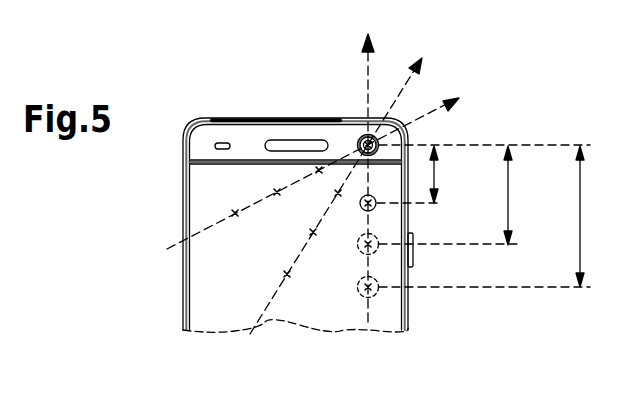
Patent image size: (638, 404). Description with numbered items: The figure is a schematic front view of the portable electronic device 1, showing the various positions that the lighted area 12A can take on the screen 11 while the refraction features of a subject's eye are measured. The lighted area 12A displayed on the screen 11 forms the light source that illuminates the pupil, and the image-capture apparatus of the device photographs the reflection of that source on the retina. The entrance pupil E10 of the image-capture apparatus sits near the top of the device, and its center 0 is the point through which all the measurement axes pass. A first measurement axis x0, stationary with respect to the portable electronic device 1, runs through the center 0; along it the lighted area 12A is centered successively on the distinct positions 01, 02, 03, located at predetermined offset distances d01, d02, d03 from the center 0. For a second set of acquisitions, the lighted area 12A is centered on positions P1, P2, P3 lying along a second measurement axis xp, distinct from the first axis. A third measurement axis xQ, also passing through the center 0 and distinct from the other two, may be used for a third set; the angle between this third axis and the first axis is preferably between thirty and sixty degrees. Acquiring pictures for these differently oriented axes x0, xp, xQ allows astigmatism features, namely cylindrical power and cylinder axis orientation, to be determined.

The portable electronic device 1 is at (210, 117).
The screen 11 is at (248, 286).
The lighted area 12A is at (356, 141).
The entrance pupil E10 is at (361, 143).
The center of the entrance pupil 0 is at (362, 138).
The first measurement axis x0 is at (370, 62).
The third measurement axis xQ is at (409, 80).
The second measurement axis xp is at (438, 110).
The first position on the second measurement axis P1 is at (319, 173).
The second position on the second measurement axis P2 is at (277, 191).
The third position on the second measurement axis P3 is at (235, 212).
The first position on the first measurement axis 01 is at (358, 205).
The second position on the first measurement axis 02 is at (360, 245).
The third position on the first measurement axis 03 is at (368, 288).
The first offset distance d01 is at (455, 174).
The second offset distance d02 is at (529, 195).
The third offset distance d03 is at (601, 216).